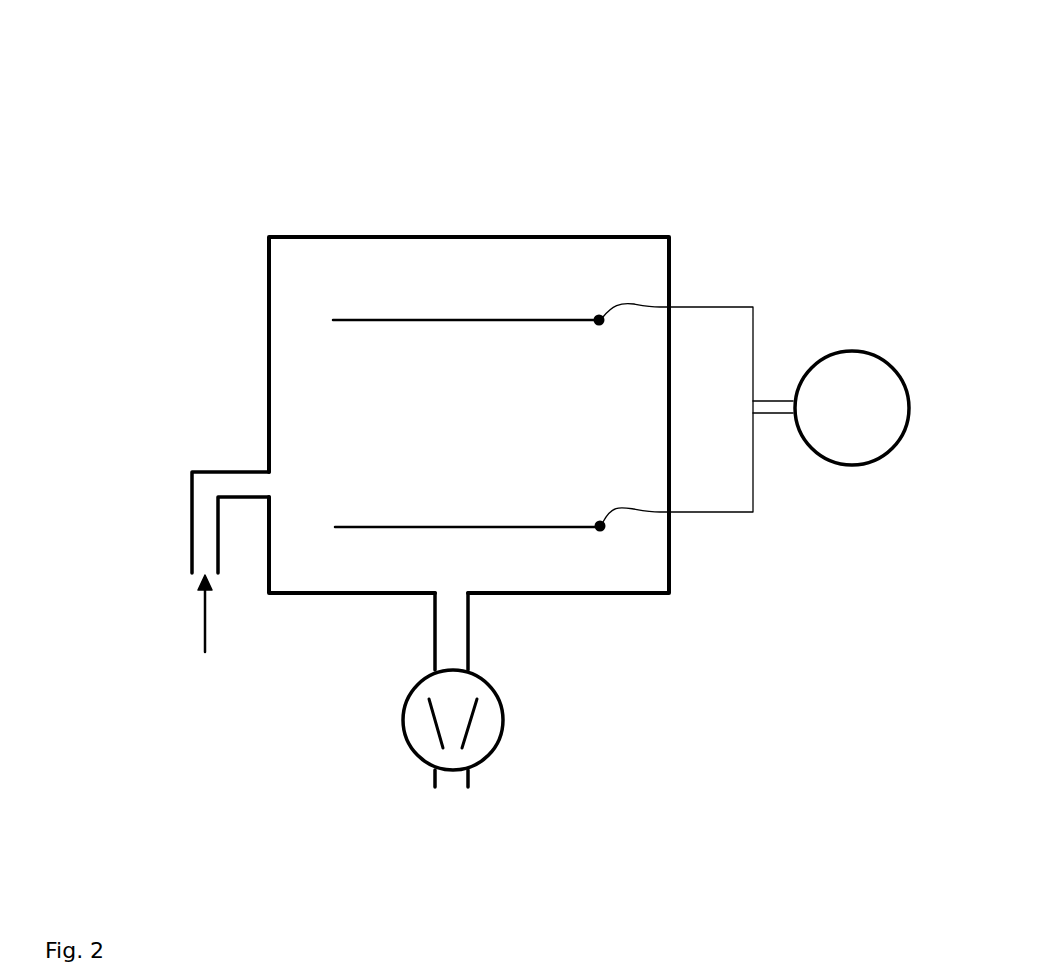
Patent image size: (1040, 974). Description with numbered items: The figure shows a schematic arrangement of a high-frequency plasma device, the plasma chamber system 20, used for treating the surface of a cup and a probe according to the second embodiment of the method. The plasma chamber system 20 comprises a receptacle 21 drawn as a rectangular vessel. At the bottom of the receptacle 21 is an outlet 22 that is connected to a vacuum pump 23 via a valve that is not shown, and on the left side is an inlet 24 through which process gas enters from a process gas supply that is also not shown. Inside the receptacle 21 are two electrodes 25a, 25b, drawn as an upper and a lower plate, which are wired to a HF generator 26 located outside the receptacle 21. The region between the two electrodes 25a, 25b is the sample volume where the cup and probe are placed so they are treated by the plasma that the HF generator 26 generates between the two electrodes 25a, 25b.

The plasma chamber system 20 is at (742, 192).
The receptacle 21 is at (518, 237).
The outlet 22 is at (447, 637).
The vacuum pump 23 is at (493, 753).
The inlet 24 is at (235, 482).
The electrode 25a is at (403, 320).
The electrode 25b is at (543, 520).
The HF generator 26 is at (877, 462).